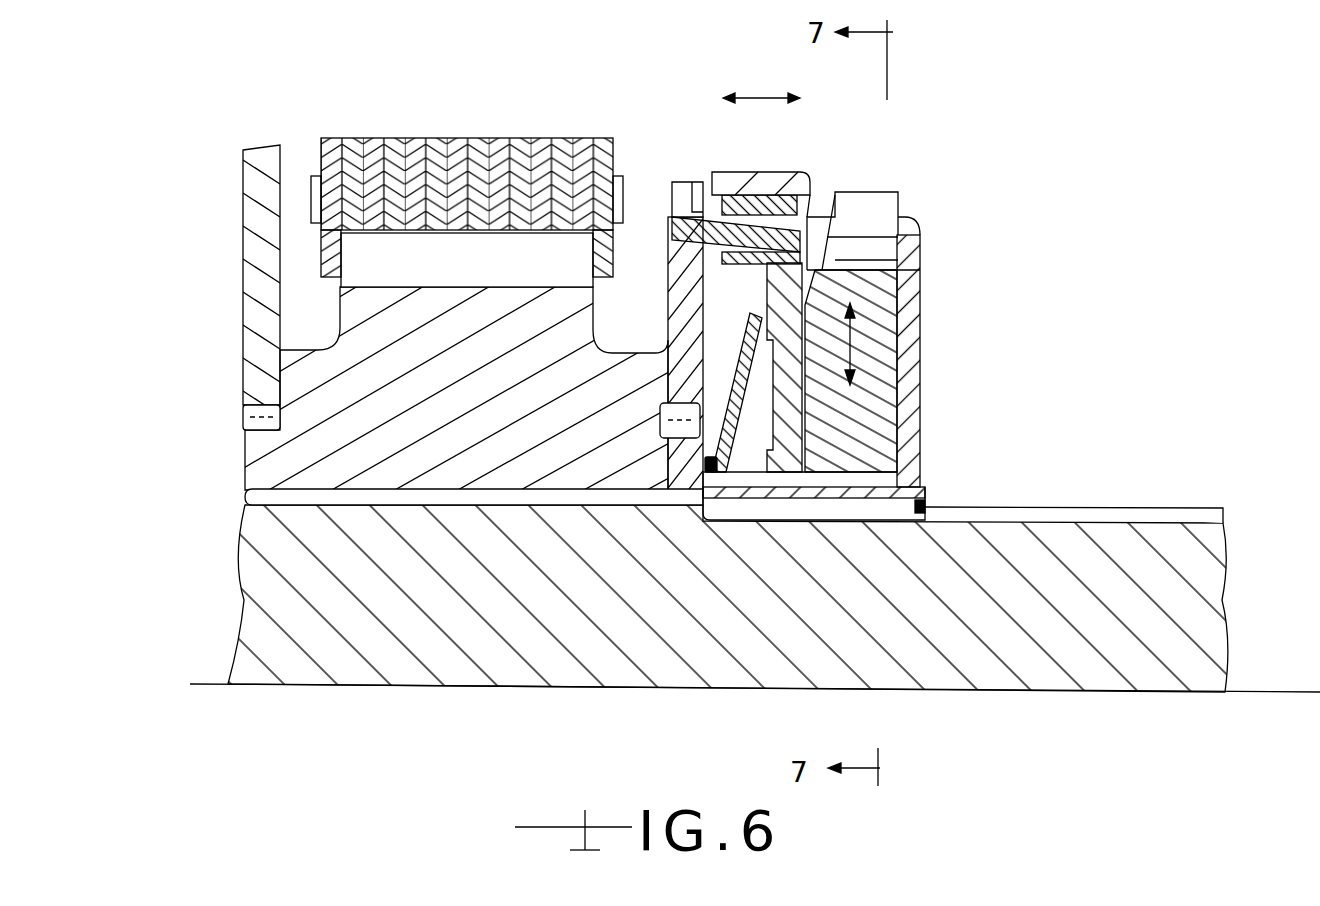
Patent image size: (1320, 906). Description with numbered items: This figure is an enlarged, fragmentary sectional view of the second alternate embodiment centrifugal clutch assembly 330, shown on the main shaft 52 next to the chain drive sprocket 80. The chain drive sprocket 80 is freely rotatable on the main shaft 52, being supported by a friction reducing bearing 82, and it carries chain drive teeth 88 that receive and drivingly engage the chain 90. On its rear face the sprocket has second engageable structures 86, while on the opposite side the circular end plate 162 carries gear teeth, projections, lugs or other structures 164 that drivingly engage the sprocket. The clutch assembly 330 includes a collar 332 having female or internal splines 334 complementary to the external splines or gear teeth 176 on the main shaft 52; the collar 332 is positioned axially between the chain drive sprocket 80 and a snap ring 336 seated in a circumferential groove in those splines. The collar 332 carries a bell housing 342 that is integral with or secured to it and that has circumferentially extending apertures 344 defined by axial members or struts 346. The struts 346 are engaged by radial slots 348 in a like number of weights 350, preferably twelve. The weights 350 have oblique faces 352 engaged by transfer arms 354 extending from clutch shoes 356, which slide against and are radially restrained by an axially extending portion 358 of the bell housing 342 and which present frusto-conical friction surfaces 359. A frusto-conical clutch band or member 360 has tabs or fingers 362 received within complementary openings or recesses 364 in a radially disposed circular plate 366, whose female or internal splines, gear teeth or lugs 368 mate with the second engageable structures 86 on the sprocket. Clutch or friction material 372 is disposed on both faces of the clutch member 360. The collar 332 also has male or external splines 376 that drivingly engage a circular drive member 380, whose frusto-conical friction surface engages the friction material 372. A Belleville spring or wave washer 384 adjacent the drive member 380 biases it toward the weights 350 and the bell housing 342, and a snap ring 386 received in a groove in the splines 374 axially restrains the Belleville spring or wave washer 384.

The main shaft 52 is at (1042, 668).
The chain drive sprocket 80 is at (285, 460).
The friction reducing bearing 82 is at (275, 503).
The second engageable structures 86 is at (673, 440).
The chain drive teeth 88 is at (387, 257).
The chain 90 is at (507, 153).
The circular end plate 162 is at (243, 252).
The gear teeth, projections, lugs or other structures 164 is at (245, 410).
The external splines or gear teeth 176 is at (1148, 508).
The second alternate embodiment centrifugal clutch assembly 330 is at (908, 86).
The collar 332 is at (905, 485).
The female or internal splines 334 is at (910, 497).
The snap ring 336 is at (923, 507).
The bell housing 342 is at (907, 372).
The circumferentially extending apertures 344 is at (922, 220).
The axial members or struts 346 is at (862, 218).
The radial slots 348 is at (872, 258).
The weights 350 is at (867, 408).
The oblique faces 352 is at (812, 177).
The transfer arms 354 is at (827, 200).
The clutch shoes 356 is at (743, 177).
The axially extending portion 358 is at (783, 178).
The frusto-conical friction surfaces 359 is at (593, 258).
The frusto-conical clutch band or member 360 is at (672, 222).
The tabs or fingers 362 is at (673, 195).
The openings or recesses 364 is at (690, 183).
The radially disposed circular plate 366 is at (680, 300).
The female or internal splines, gear teeth or lugs 368 is at (660, 415).
The clutch or friction material 372 is at (733, 264).
The splines 374 is at (716, 473).
The male or external splines 376 is at (797, 477).
The circular drive member 380 is at (787, 430).
The Belleville spring or wave washer 384 is at (735, 483).
The snap ring 386 is at (709, 478).